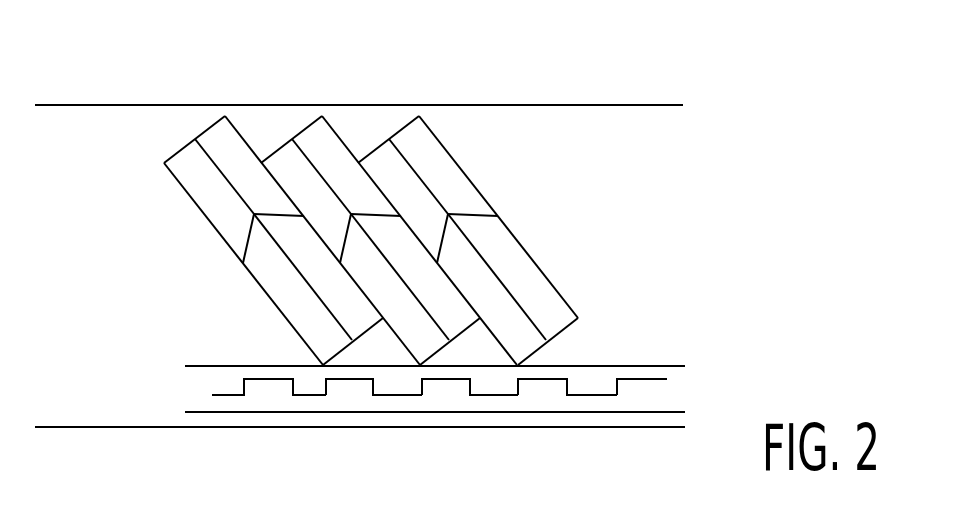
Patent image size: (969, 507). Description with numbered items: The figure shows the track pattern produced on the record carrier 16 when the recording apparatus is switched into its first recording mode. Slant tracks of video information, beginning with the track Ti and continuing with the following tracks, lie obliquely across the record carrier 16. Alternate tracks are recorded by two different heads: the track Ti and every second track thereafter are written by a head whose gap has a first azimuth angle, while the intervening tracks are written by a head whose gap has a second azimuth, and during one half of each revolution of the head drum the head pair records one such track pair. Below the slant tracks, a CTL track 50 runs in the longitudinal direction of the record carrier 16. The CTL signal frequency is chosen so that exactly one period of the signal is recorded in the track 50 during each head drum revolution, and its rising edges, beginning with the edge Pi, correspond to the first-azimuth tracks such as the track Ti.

The record carrier 16 is at (580, 102).
The CTL track 50 is at (650, 413).
The slant track Ti is at (182, 158).
The rising edge Pi is at (326, 382).